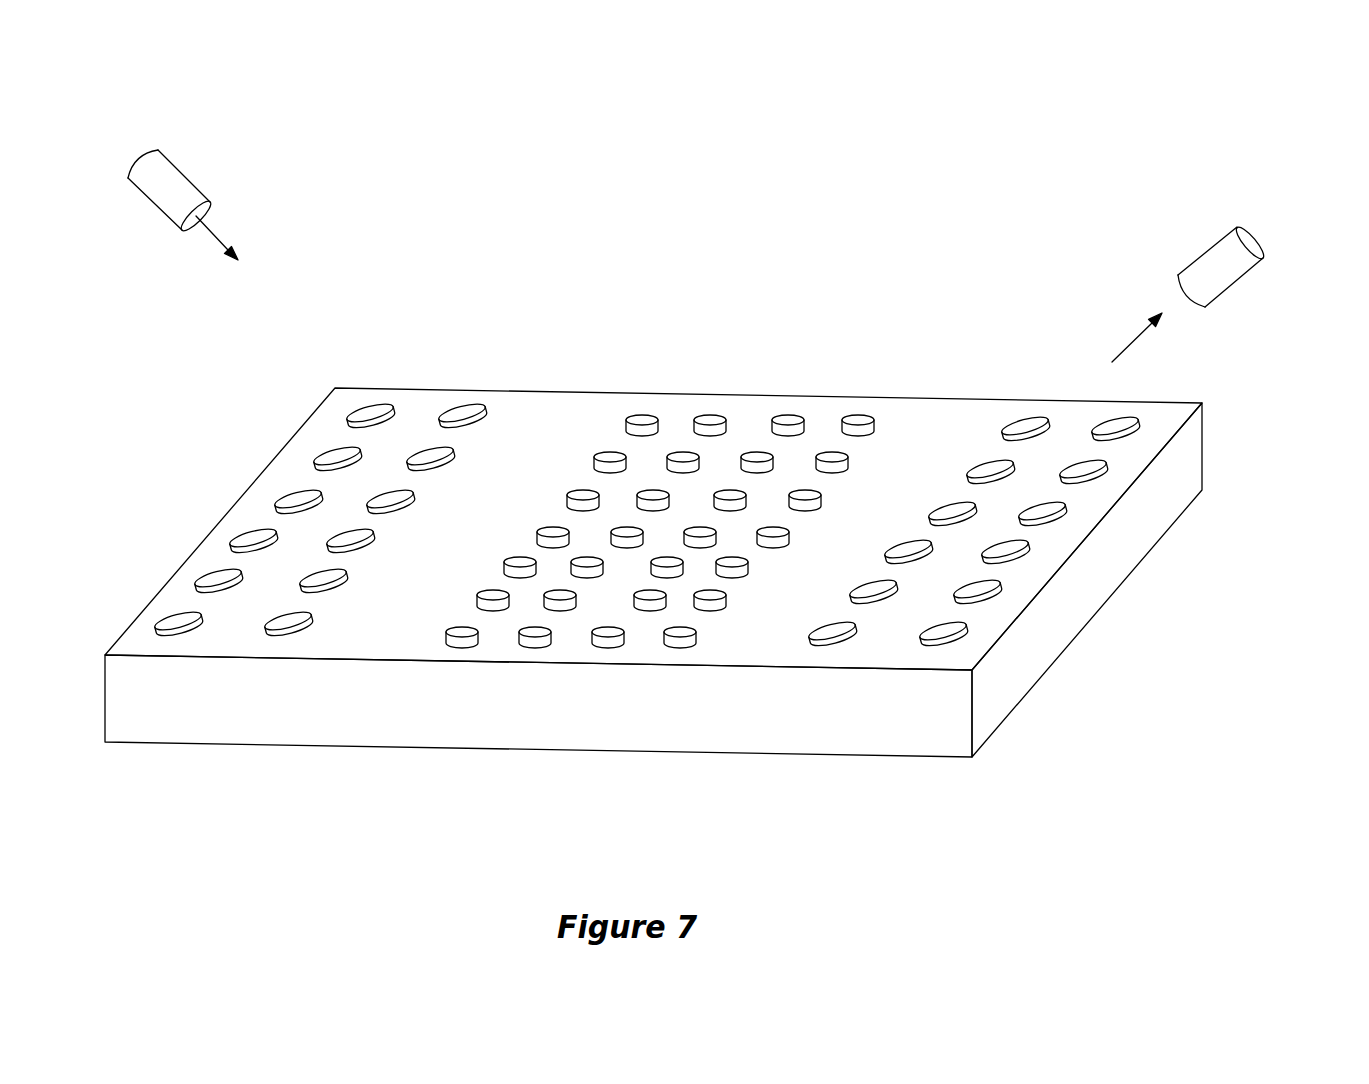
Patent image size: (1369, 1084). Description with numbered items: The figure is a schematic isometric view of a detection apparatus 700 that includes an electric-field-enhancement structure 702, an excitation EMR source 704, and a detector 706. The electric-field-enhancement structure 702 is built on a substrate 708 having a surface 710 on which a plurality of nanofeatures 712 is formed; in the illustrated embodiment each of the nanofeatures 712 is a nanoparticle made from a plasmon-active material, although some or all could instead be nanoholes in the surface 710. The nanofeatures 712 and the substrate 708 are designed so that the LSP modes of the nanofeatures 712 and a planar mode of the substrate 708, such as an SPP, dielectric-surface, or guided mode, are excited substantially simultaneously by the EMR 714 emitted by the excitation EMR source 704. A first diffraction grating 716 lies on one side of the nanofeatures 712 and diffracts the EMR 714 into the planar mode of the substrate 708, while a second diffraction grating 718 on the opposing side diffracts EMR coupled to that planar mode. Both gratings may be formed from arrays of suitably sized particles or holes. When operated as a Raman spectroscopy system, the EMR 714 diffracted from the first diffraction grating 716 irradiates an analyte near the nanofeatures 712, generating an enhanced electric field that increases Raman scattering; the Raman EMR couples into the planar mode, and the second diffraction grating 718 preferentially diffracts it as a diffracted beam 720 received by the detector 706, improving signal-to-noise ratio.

The detection apparatus 700 is at (988, 143).
The electric-field-enhancement structure 702 is at (705, 540).
The excitation EMR source 704 is at (175, 183).
The detector 706 is at (1230, 268).
The substrate 708 is at (1120, 562).
The surface 710 is at (545, 407).
The nanofeatures 712 is at (860, 425).
The EMR 714 is at (215, 230).
The first diffraction grating 716 is at (320, 652).
The second diffraction grating 718 is at (972, 652).
The diffracted beam 720 is at (1128, 345).